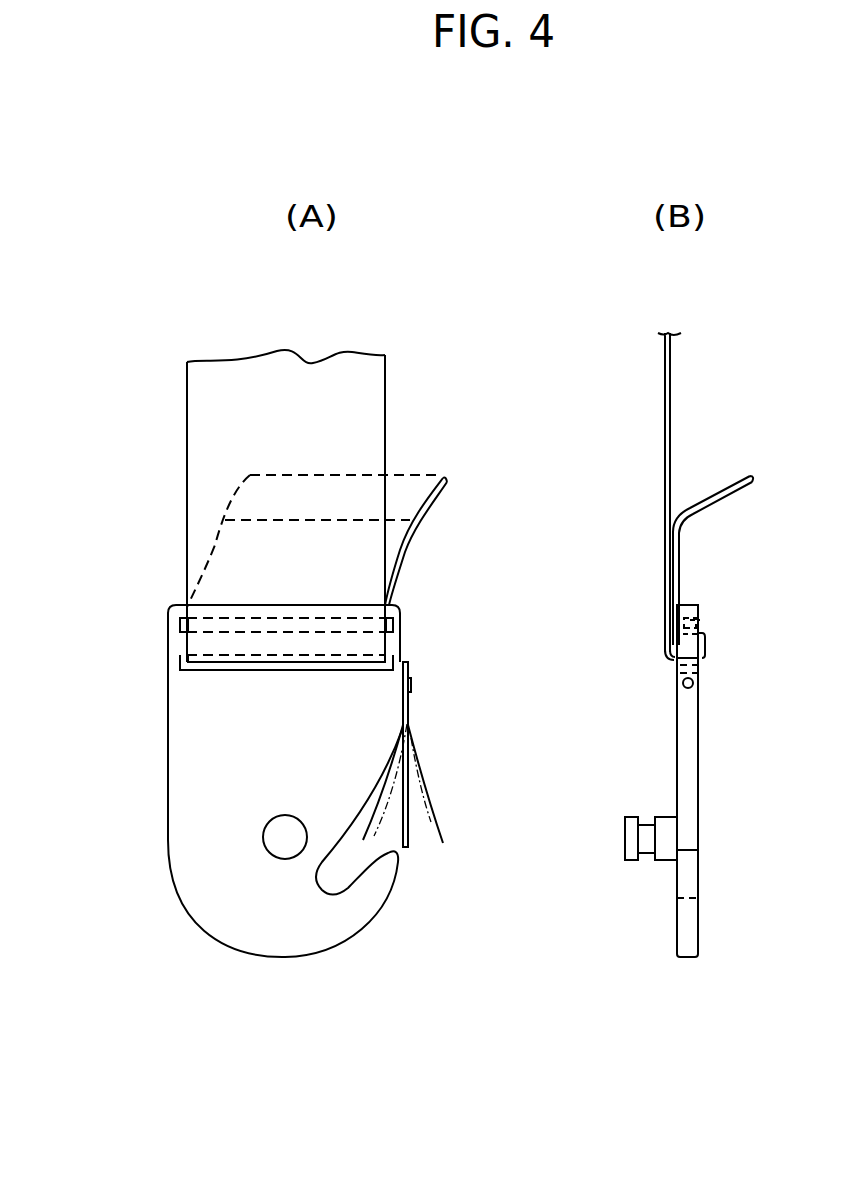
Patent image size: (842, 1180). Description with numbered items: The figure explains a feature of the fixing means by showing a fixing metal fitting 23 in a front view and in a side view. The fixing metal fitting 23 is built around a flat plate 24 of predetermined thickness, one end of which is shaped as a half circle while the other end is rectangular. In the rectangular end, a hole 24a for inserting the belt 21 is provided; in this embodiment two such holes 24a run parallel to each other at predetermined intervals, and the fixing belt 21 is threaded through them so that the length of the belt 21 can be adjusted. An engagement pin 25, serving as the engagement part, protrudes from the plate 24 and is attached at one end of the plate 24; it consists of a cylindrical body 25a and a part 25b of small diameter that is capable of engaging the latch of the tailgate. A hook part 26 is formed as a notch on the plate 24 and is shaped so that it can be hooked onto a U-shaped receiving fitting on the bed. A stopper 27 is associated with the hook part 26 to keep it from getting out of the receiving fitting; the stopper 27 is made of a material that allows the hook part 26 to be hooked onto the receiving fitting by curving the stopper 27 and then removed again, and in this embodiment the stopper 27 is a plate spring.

The belt 21 is at (367, 392).
The fixing metal fitting 23 is at (168, 704).
The plate 24 is at (190, 776).
The hole 24a is at (400, 617).
The engagement pin 25 is at (256, 838).
The cylindrical body 25a is at (668, 861).
The small-diameter part 25b is at (648, 861).
The hook part 26 is at (358, 870).
The stopper 27 is at (405, 823).